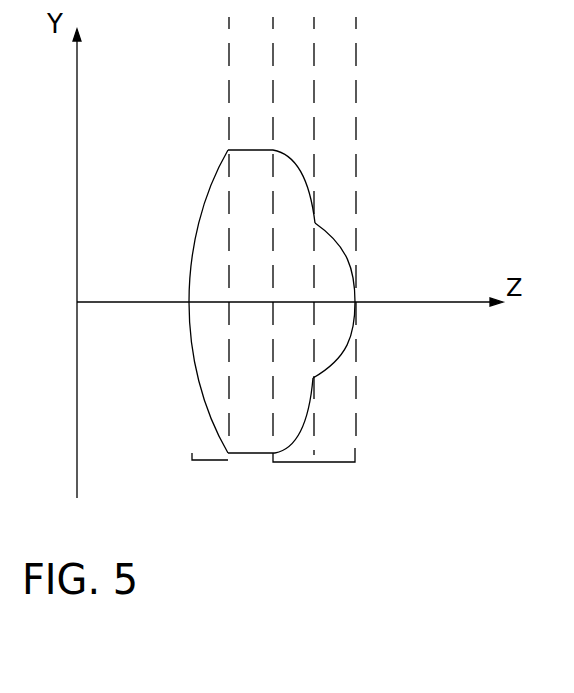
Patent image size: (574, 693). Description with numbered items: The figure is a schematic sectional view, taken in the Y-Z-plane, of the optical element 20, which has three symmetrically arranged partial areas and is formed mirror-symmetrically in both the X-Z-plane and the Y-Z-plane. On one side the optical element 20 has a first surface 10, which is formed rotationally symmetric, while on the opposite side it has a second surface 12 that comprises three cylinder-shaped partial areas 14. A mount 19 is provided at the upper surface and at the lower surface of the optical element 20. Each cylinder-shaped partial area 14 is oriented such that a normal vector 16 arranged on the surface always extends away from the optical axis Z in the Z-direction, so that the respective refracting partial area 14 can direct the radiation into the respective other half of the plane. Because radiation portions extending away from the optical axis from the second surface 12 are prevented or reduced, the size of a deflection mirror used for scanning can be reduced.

The first surface 10 is at (210, 460).
The second surface 12 is at (314, 462).
The cylinder-shaped partial area 14 is at (303, 172).
The normal vector 16 is at (358, 323).
The mount 19 is at (248, 150).
The optical element 20 is at (388, 76).